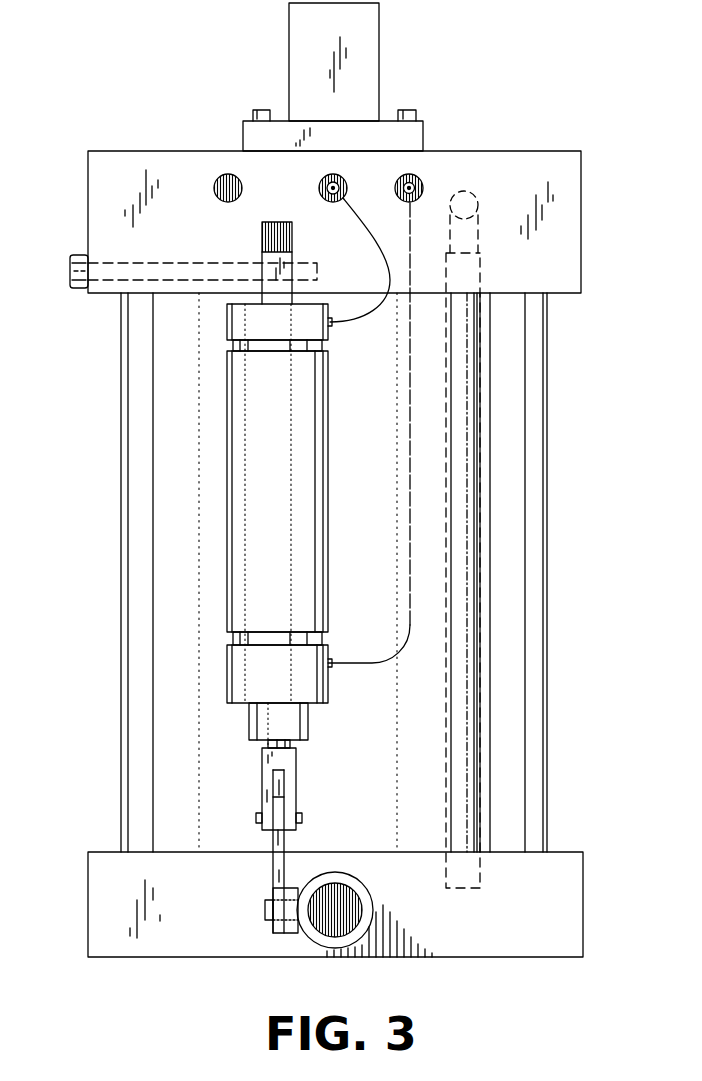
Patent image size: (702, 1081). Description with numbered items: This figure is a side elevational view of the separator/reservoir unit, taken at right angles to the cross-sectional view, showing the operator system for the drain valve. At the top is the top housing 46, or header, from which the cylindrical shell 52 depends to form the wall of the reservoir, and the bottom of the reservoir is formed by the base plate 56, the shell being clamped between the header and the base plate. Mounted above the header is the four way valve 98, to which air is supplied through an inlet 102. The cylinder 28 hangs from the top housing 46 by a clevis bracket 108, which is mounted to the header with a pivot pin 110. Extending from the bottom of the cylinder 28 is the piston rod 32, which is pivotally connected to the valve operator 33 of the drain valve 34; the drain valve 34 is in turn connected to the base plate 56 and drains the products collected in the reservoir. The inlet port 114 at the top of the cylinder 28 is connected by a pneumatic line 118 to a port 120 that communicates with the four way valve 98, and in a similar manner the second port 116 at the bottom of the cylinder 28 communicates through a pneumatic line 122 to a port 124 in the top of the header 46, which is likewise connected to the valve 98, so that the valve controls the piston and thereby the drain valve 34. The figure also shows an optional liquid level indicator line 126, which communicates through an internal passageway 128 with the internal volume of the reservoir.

The cylinder 28 is at (227, 388).
The piston rod 32 is at (296, 780).
The valve operator 33 is at (273, 878).
The drain valve 34 is at (372, 893).
The top housing 46 is at (538, 151).
The cylindrical shell 52 is at (547, 437).
The base plate 56 is at (570, 852).
The four way valve 98 is at (379, 66).
The inlet 102 is at (222, 175).
The clevis bracket 108 is at (292, 262).
The pivot pin 110 is at (73, 290).
The inlet port 114 is at (328, 325).
The second port 116 is at (328, 667).
The pneumatic line 118 is at (390, 283).
The port 120 is at (320, 183).
The pneumatic line 122 is at (410, 404).
The port 124 is at (423, 183).
The liquid level indicator line 126 is at (480, 400).
The internal passageway 128 is at (476, 220).